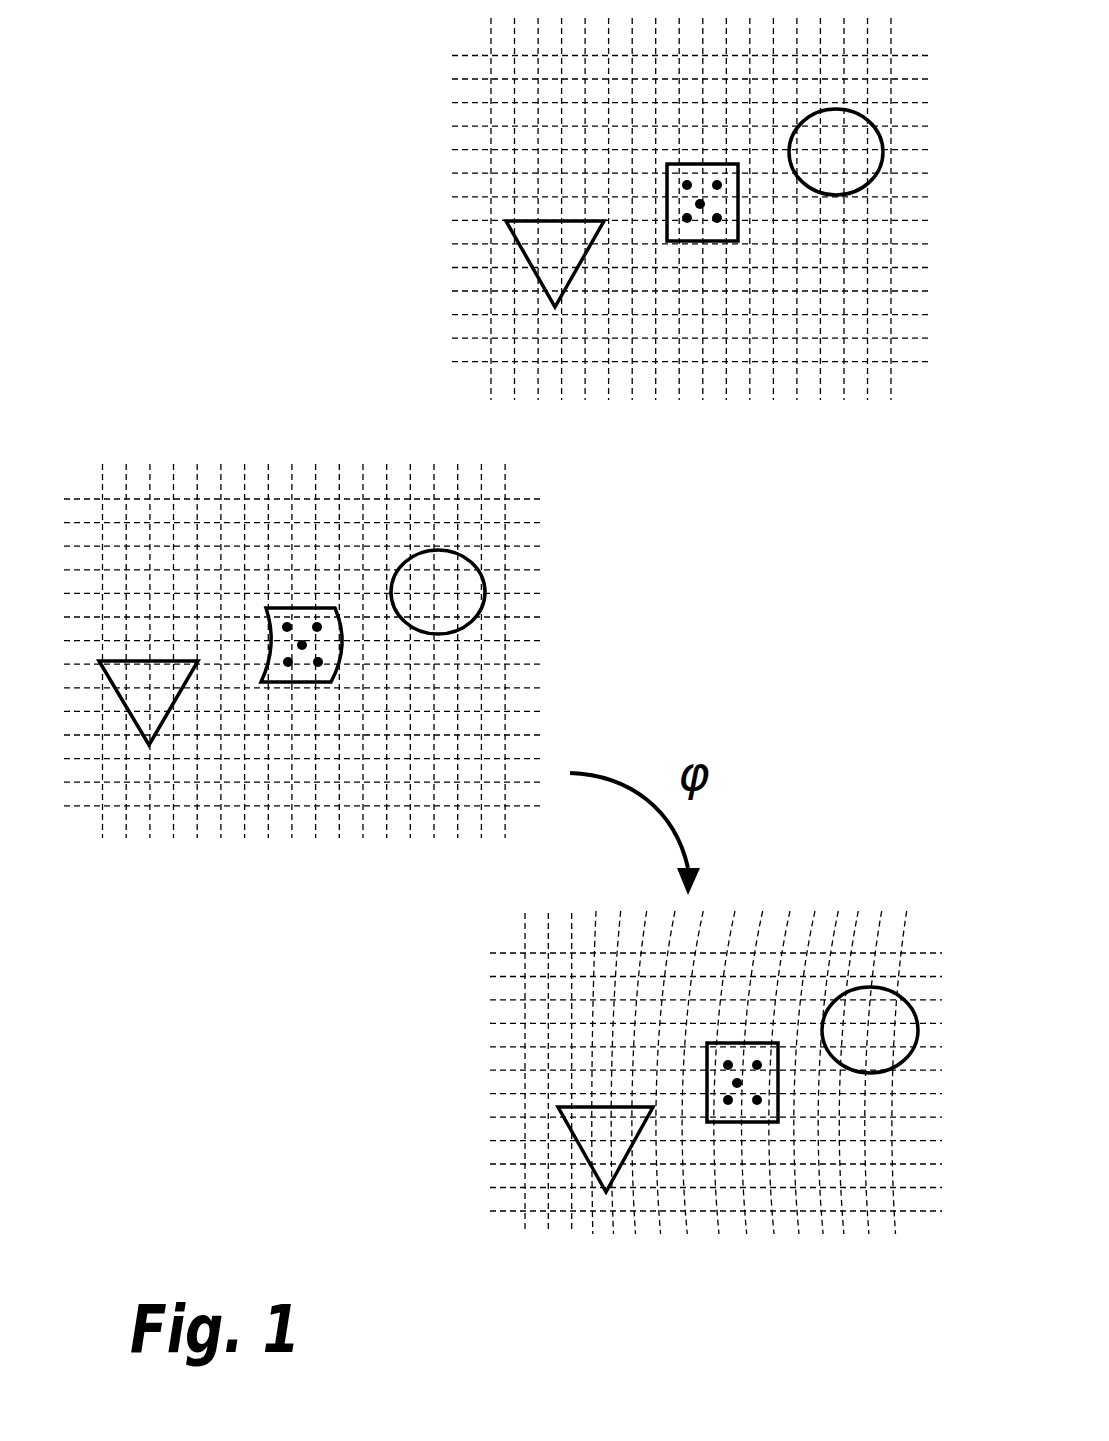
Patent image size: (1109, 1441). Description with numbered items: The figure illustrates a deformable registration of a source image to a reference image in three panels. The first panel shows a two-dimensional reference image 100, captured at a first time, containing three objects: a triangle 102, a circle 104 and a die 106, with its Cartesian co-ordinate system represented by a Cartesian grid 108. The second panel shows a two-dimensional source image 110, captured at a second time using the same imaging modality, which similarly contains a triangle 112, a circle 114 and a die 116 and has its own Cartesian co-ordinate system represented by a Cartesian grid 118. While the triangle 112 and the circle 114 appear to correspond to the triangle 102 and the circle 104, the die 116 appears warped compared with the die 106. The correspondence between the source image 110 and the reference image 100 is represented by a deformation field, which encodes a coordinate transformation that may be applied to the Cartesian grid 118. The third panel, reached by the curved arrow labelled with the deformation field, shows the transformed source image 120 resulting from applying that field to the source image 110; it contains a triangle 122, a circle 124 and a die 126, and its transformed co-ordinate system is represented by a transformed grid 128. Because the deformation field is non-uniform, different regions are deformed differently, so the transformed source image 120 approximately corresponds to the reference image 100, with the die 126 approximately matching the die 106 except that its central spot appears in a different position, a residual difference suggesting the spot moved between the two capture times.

The reference image 100 is at (712, 25).
The triangle 102 is at (533, 270).
The circle 104 is at (839, 198).
The die 106 is at (714, 243).
The Cartesian grid 108 is at (482, 150).
The source image 110 is at (307, 454).
The triangle 112 is at (162, 659).
The circle 114 is at (485, 596).
The die 116 is at (298, 683).
The Cartesian grid 118 is at (196, 782).
The transformed source image 120 is at (833, 892).
The triangle 122 is at (582, 1152).
The circle 124 is at (875, 1073).
The die 126 is at (747, 1122).
The transformed grid 128 is at (513, 1068).